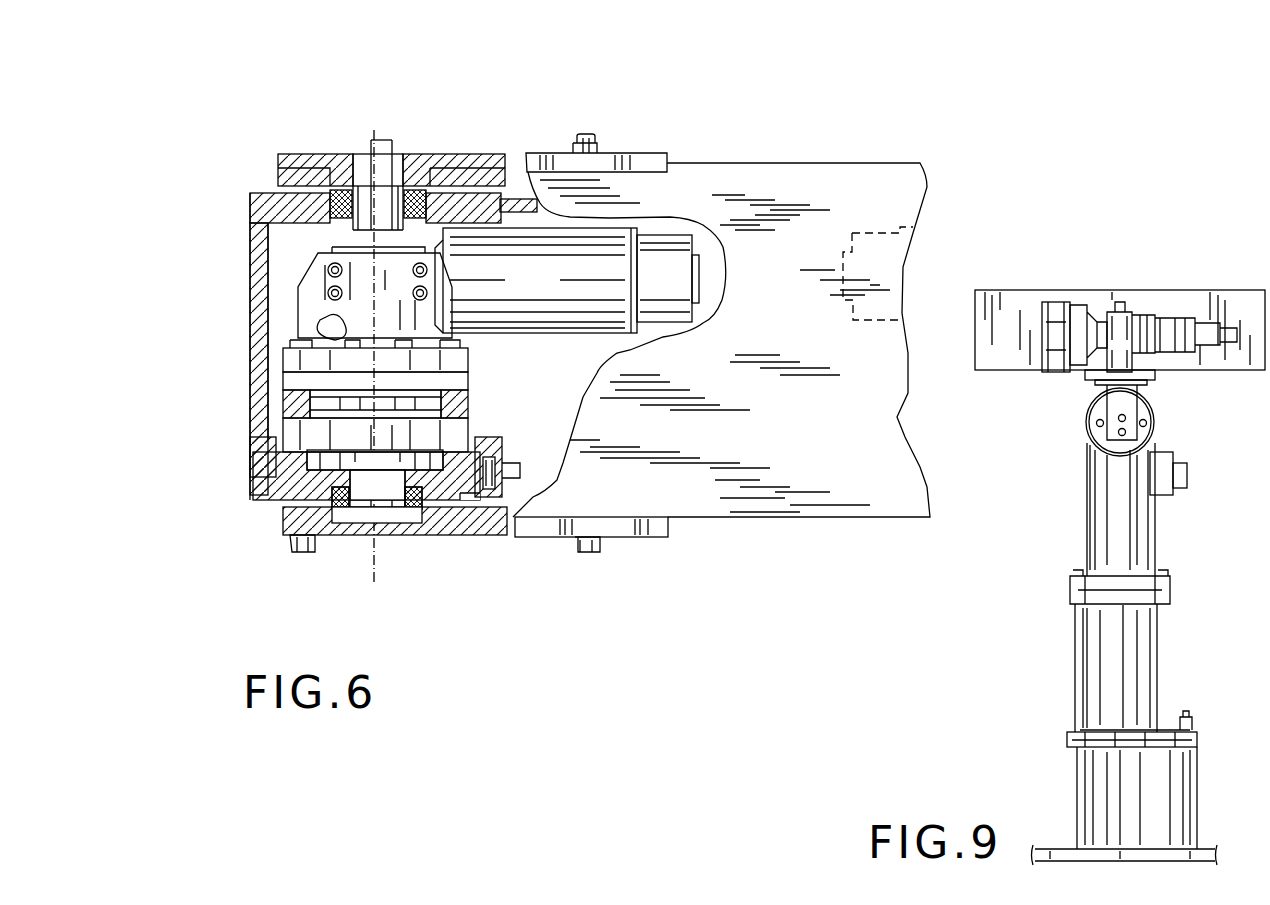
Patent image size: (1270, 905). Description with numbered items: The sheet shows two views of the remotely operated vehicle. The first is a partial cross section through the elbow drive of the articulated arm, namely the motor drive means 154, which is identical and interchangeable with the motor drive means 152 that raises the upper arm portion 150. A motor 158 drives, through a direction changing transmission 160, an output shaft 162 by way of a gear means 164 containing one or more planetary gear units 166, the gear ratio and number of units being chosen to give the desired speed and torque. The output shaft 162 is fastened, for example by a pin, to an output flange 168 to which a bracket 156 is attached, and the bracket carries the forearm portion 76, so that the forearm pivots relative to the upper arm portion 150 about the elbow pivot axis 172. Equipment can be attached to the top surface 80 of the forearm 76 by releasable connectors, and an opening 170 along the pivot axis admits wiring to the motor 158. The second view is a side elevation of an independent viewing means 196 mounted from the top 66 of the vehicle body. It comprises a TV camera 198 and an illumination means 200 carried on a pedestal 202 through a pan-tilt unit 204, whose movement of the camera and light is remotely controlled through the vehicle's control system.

In FIG. 9, the top of the body 66 is at (1200, 849).
In FIG. 6, the forearm portion 76 is at (920, 163).
In FIG. 6, the top surface of the forearm 80 is at (776, 363).
In FIG. 6, the upper arm portion 150 is at (250, 385).
In FIG. 6, the motor drive means 152 is at (867, 227).
In FIG. 6, the motor drive means 154 is at (275, 497).
In FIG. 6, the bracket 156 is at (625, 537).
In FIG. 6, the motor 158 is at (551, 287).
In FIG. 6, the direction changing transmission 160 is at (322, 298).
In FIG. 6, the output shaft 162 is at (410, 515).
In FIG. 6, the gear means 164 is at (280, 358).
In FIG. 6, the planetary gear units 166 is at (258, 425).
In FIG. 6, the output flange 168 is at (497, 520).
In FIG. 6, the opening 170 is at (393, 168).
In FIG. 6, the elbow pivot axis 172 is at (372, 572).
In FIG. 9, the viewing means 196 is at (1157, 250).
In FIG. 9, the TV camera 198 is at (1017, 288).
In FIG. 9, the illumination means 200 is at (1057, 372).
In FIG. 9, the pedestal 202 is at (1075, 685).
In FIG. 9, the pan-tilt unit 204 is at (1085, 513).